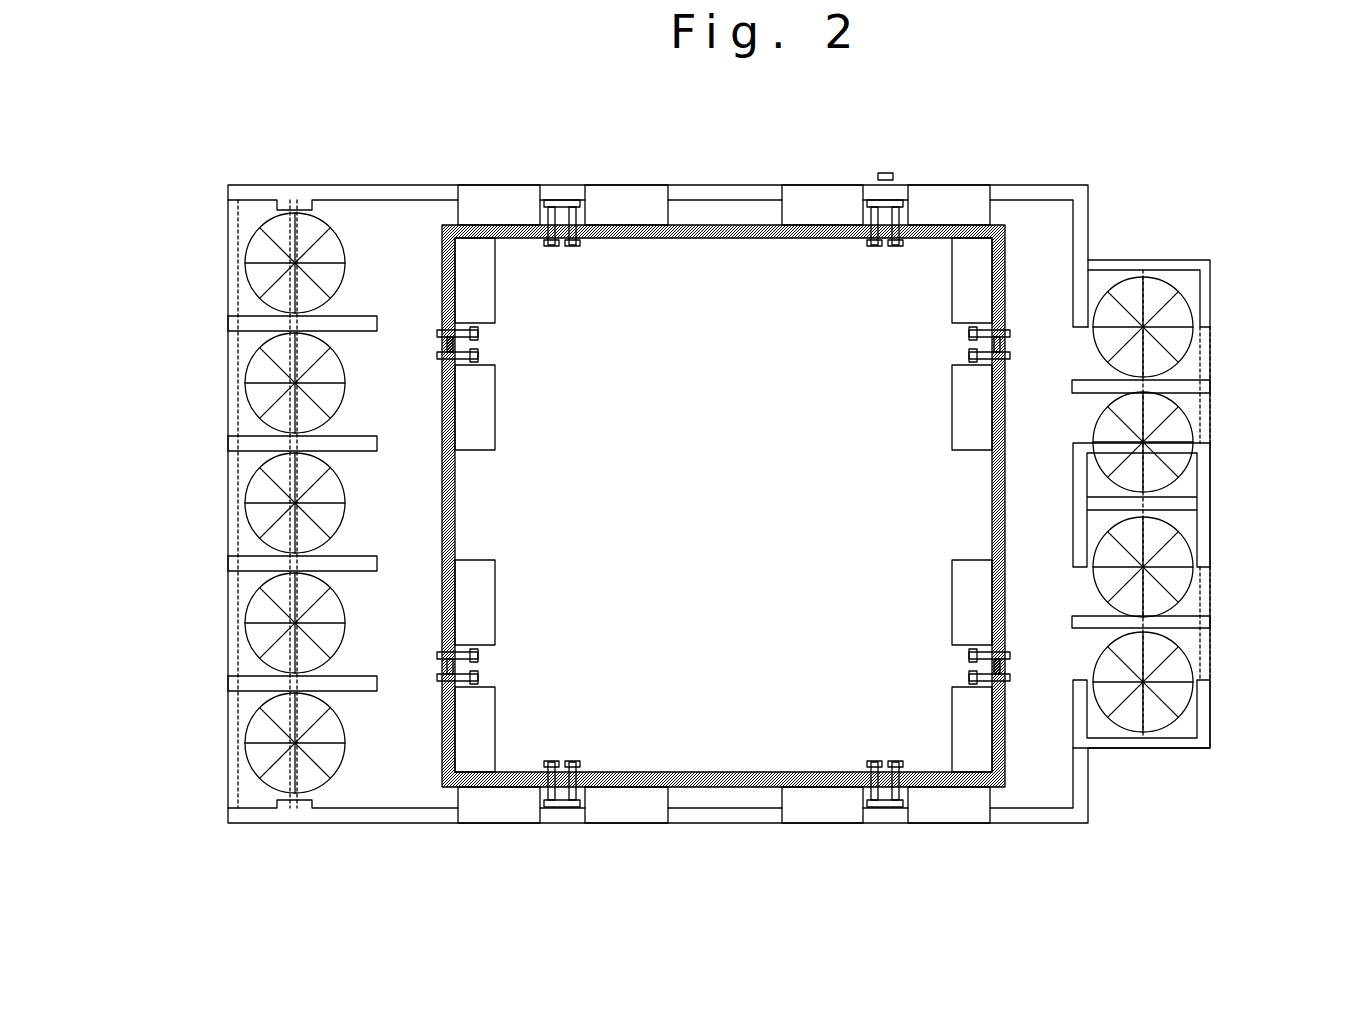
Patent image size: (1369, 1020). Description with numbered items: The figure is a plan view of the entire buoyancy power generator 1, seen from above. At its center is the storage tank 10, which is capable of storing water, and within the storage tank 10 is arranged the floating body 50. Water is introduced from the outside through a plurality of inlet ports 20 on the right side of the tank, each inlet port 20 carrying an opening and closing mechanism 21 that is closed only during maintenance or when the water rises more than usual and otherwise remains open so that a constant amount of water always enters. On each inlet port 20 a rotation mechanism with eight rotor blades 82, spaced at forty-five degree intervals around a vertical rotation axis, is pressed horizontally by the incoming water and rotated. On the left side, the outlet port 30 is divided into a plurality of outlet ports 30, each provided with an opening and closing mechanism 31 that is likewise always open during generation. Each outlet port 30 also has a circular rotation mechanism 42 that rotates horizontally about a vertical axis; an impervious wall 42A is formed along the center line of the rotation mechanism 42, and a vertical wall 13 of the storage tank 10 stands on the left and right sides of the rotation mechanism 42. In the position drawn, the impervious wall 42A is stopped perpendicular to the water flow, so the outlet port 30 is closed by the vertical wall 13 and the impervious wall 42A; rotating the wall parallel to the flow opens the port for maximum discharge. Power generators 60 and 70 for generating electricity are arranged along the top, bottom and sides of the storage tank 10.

The buoyancy power generator 1 is at (197, 90).
The storage tank 10 is at (728, 226).
The vertical wall 13 is at (297, 205).
The inlet port 20 is at (1279, 363).
The opening and closing mechanism 21 is at (1212, 358).
The outlet port 30 is at (140, 271).
The opening and closing mechanism 31 is at (240, 262).
The rotation mechanism 42 is at (350, 290).
The impervious wall 42A is at (305, 240).
The floating body 50 is at (720, 520).
The power generator 60 is at (625, 205).
The power generator 70 is at (472, 410).
The rotor blade 82 is at (1173, 442).